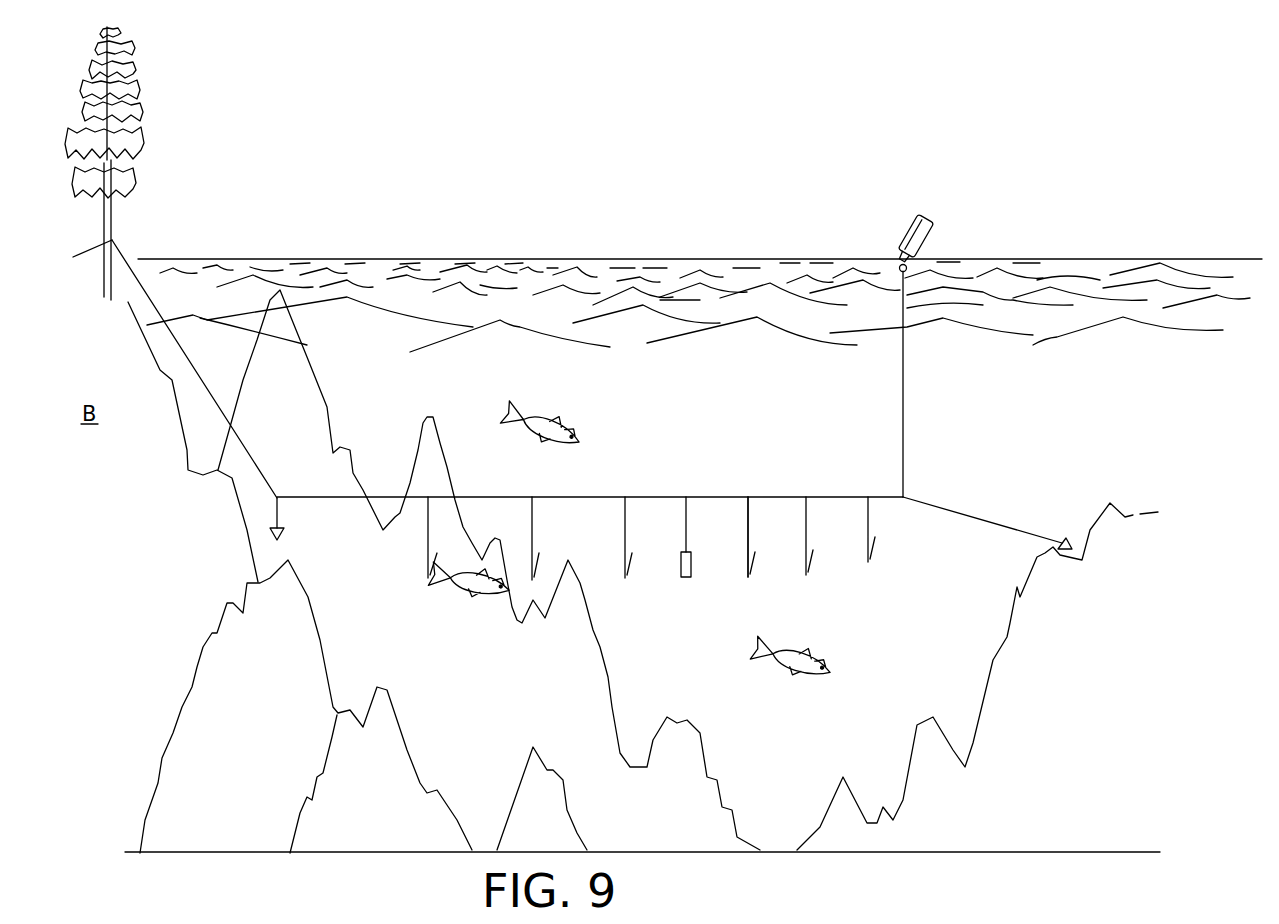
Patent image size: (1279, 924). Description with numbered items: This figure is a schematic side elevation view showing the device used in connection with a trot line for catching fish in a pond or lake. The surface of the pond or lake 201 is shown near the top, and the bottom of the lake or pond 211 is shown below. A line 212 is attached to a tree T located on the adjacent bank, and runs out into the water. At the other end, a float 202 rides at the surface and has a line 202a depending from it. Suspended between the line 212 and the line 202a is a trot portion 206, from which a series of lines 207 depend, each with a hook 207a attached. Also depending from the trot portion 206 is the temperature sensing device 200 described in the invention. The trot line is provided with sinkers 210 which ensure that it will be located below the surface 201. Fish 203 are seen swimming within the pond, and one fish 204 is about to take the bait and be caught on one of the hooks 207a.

The tree T is at (112, 213).
The temperature sensing device 200 is at (676, 579).
The surface of the pond or lake 201 is at (608, 259).
The float 202 is at (933, 223).
The line 202a is at (905, 384).
The fish 203 is at (582, 432).
The fish 204 is at (465, 600).
The trot portion 206 is at (780, 496).
The lines 207 is at (812, 535).
The hooks 207a is at (752, 560).
The sinkers 210 is at (266, 534).
The bottom of the lake or pond 211 is at (550, 767).
The line 212 is at (106, 266).